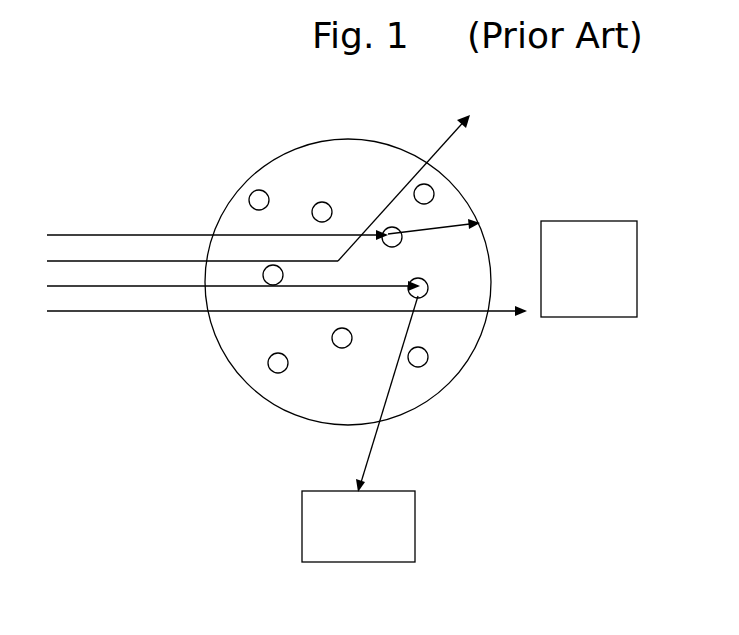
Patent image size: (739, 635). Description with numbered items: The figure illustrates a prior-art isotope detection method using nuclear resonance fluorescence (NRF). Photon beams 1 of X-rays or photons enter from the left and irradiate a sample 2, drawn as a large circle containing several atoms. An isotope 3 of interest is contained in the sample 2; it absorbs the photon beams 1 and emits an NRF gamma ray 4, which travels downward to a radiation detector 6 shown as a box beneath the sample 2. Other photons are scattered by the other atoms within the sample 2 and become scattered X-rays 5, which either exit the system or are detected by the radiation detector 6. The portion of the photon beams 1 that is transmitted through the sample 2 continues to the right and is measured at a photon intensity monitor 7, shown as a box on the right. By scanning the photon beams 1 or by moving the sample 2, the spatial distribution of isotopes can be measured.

The photon beams 1 is at (287, 281).
The sample 2 is at (335, 140).
The isotope 3 is at (428, 283).
The NRF gamma ray 4 is at (370, 447).
The scattered X-rays 5 is at (448, 138).
The radiation detector 6 is at (400, 491).
The photon intensity monitor 7 is at (614, 221).